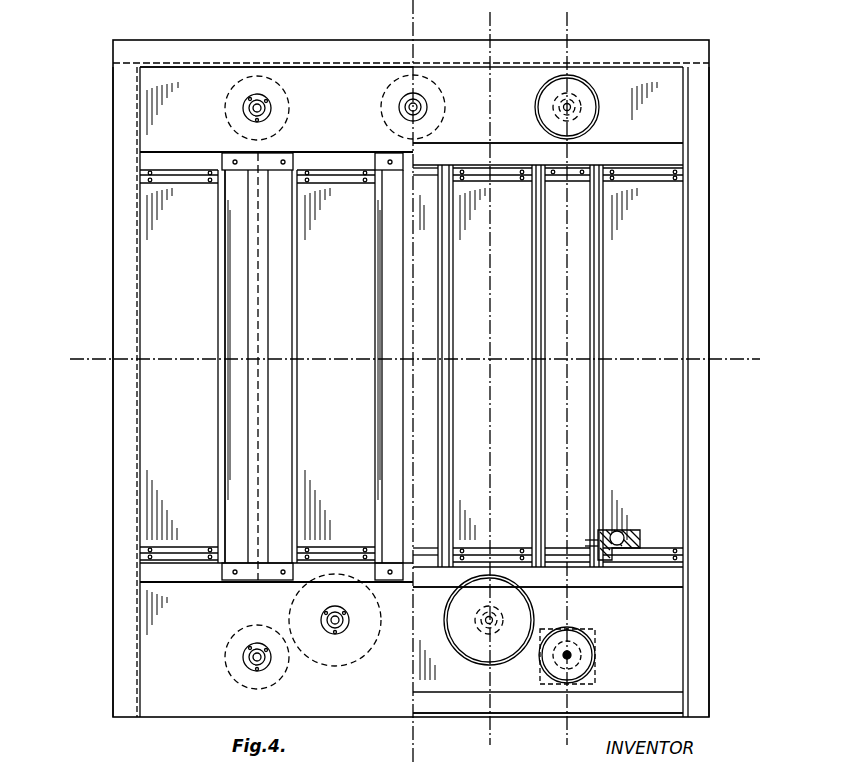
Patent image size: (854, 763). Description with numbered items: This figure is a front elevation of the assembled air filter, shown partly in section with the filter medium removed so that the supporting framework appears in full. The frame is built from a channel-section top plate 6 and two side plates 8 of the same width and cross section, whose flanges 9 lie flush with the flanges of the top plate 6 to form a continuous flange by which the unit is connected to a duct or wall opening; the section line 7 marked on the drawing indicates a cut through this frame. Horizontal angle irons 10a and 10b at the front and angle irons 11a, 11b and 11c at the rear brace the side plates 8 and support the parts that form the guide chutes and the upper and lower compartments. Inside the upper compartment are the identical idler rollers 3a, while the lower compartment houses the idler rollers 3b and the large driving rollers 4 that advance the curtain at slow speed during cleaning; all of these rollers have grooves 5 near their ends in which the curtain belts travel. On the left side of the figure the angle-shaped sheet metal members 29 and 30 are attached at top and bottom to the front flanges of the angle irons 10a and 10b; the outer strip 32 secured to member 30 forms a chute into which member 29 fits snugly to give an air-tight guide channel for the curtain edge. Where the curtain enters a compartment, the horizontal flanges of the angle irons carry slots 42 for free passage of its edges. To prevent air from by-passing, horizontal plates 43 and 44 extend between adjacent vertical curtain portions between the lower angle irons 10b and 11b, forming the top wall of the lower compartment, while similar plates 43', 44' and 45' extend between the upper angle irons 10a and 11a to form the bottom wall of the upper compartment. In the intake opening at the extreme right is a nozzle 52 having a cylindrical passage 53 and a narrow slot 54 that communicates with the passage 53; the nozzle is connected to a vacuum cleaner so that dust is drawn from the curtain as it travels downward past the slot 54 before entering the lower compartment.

The section line 7-7 / top frame member 7 is at (355, 38).
The top plate 6 is at (606, 65).
The grooves 5 is at (83, 340).
The flanges 9 is at (122, 98).
The side plates 8 is at (688, 233).
The rollers 3a is at (290, 114).
The rollers 3b is at (278, 680).
The rollers 4 is at (365, 640).
The angle iron 10a is at (175, 152).
The angle iron 10b is at (200, 578).
The angle iron 11a is at (628, 152).
The angle iron 11b is at (650, 582).
The angle iron 11c is at (606, 705).
The angle shaped sheet metal member 29 is at (218, 440).
The angle shaped sheet metal member 30 is at (375, 303).
The outer sheet metal strip 32 is at (268, 346).
The slots 42 is at (442, 567).
The sheet metal plate 43 is at (590, 389).
The sheet metal plate 44 is at (492, 370).
The sheet metal plate 44' is at (466, 361).
The sheet metal plate 43' is at (567, 365).
The sheet metal plate 45' is at (675, 377).
The nozzle 52 is at (622, 544).
The cylindrical passage 53 is at (620, 531).
The narrow slot 54 is at (596, 540).